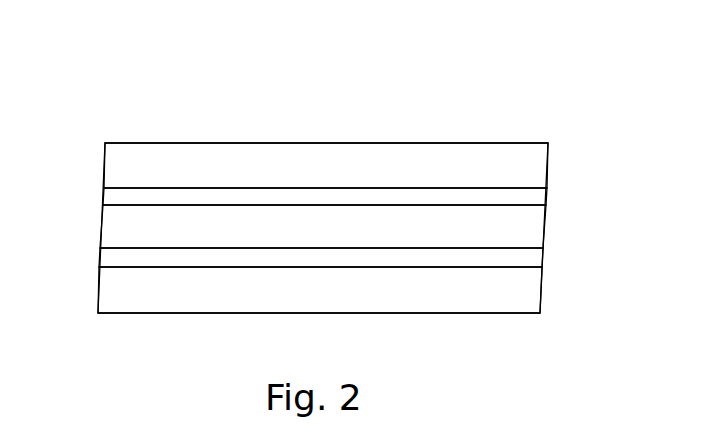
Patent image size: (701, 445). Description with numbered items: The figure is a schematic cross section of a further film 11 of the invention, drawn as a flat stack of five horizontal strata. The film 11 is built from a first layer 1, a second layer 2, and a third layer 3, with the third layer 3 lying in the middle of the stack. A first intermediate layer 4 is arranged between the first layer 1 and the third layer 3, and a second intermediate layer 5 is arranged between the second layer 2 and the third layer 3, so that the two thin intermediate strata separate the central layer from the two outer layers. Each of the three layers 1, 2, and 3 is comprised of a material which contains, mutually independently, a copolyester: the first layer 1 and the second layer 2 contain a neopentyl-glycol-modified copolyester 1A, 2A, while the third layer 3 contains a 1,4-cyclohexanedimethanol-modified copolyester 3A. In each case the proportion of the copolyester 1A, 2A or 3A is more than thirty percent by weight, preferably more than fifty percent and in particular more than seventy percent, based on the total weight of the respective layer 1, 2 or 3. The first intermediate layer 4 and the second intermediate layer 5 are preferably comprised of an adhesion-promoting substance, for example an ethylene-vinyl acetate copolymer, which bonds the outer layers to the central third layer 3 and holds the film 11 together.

The film 11 is at (203, 77).
The first layer 1 is at (341, 139).
The neopentyl-glycol-modified copolyester 1A is at (484, 161).
The first intermediate layer 4 is at (114, 196).
The third layer 3 is at (374, 221).
The 1,4-cyclohexanedimethanol-modified copolyester 3A is at (516, 228).
The second intermediate layer 5 is at (114, 257).
The second layer 2 is at (331, 315).
The neopentyl-glycol-modified copolyester 2A is at (471, 293).